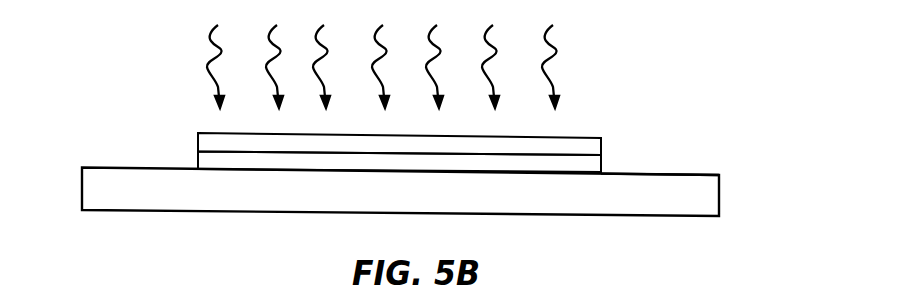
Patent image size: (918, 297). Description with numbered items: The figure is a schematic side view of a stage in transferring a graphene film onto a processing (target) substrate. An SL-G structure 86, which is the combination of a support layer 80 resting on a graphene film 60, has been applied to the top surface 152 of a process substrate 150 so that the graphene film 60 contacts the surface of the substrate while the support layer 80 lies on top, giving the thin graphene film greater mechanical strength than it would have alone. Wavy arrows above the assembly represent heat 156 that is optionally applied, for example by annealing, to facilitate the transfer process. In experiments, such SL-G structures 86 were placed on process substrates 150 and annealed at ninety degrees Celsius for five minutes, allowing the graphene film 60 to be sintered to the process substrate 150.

The heat 156 is at (551, 33).
The support layer 80 is at (580, 148).
The graphene film 60 is at (594, 164).
The SL-G structure 86 is at (190, 134).
The process substrate 150 is at (422, 199).
The top surface 152 is at (681, 175).